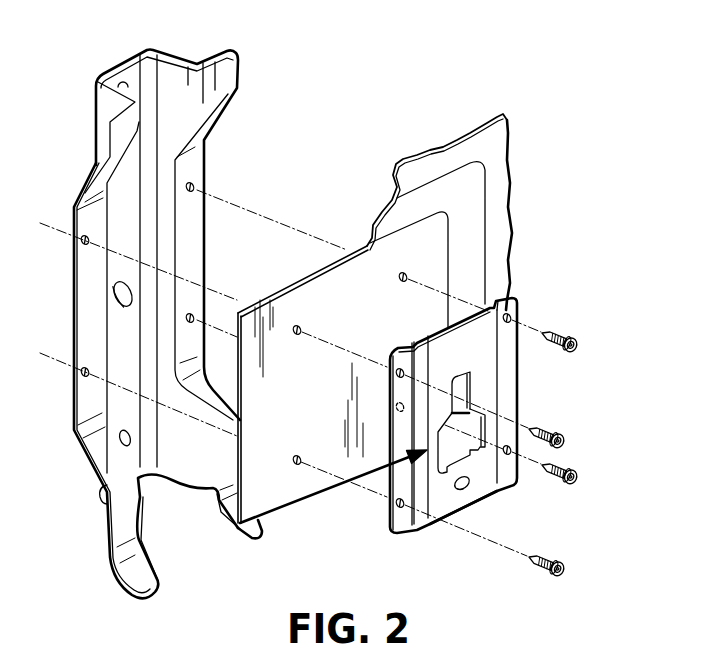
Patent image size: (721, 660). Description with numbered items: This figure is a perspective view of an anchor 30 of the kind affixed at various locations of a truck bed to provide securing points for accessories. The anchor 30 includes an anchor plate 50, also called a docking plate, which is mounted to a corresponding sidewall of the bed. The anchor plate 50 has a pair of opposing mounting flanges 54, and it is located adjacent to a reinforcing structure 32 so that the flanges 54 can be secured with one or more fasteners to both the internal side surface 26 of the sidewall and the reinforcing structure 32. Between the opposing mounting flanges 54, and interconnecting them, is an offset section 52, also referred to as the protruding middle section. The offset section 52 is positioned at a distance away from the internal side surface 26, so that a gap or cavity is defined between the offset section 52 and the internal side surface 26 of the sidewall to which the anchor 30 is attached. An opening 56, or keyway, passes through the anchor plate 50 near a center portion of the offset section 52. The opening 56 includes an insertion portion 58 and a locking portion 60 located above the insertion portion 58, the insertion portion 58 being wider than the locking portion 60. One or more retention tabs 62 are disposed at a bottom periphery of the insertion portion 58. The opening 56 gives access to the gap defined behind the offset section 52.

The internal side surface 26 is at (436, 170).
The anchor 30 is at (576, 260).
The reinforcing structure 32 is at (167, 79).
The anchor plate 50 is at (464, 352).
The offset section 52 is at (471, 512).
The mounting flange 54 is at (508, 352).
The opening 56 is at (422, 452).
The insertion portion 58 is at (485, 428).
The locking portion 60 is at (473, 400).
The retention tab 62 is at (491, 449).